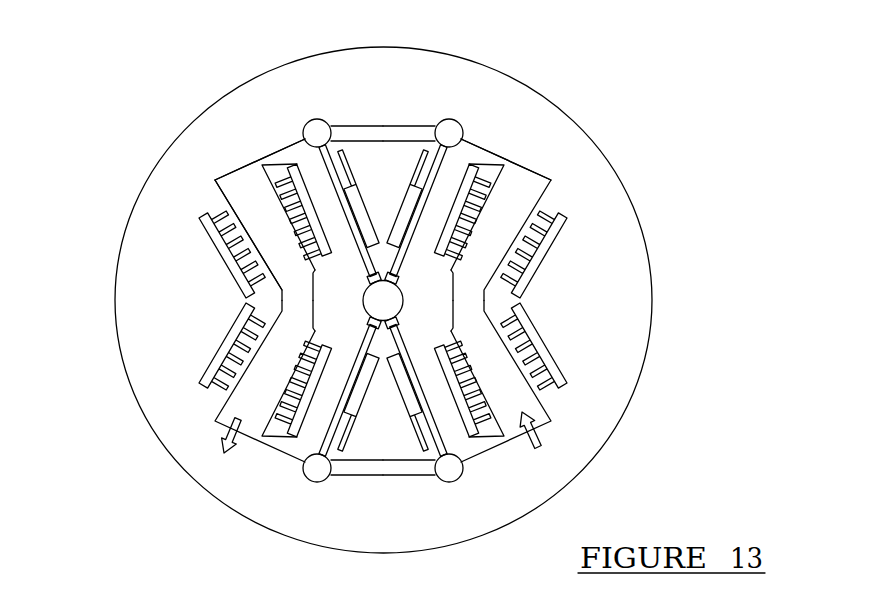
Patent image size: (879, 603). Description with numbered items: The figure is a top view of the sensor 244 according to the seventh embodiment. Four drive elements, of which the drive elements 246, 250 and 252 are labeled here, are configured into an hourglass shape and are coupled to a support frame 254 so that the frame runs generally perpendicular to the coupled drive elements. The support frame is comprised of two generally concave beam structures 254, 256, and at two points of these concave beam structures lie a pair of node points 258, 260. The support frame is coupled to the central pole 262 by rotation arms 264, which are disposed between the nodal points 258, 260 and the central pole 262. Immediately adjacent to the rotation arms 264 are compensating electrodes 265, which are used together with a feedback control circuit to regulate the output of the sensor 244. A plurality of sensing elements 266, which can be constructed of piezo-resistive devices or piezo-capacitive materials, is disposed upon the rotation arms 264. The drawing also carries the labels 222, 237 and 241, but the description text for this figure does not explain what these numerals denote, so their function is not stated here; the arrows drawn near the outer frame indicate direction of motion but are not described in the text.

The direction arrow 222 is at (218, 415).
The actuator assembly 237 is at (680, 110).
The outer housing ring 241 is at (198, 524).
The sensor 244 is at (509, 111).
The drive element 246 is at (213, 188).
The drive element 250 is at (204, 241).
The drive element 252 is at (549, 190).
The support frame 254 is at (257, 160).
The generally concave beam structure 256 is at (388, 477).
The node point 258 is at (317, 119).
The node point 260 is at (449, 119).
The central pole 262 is at (363, 311).
The rotation arm 264 is at (416, 165).
The compensating electrode 265 is at (364, 211).
The sensing element 266 is at (354, 254).